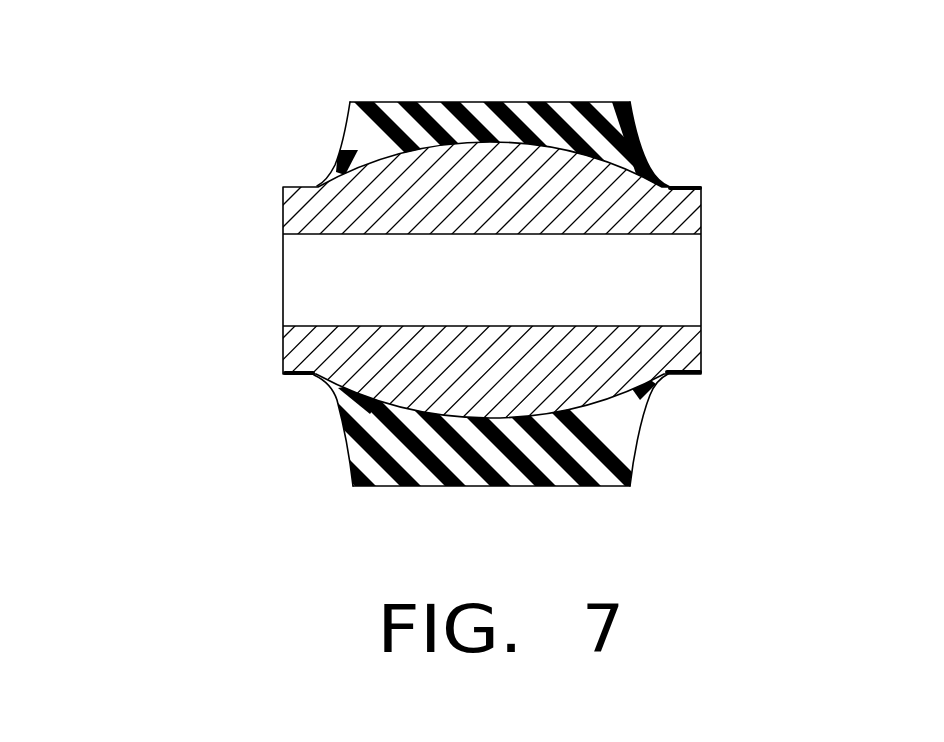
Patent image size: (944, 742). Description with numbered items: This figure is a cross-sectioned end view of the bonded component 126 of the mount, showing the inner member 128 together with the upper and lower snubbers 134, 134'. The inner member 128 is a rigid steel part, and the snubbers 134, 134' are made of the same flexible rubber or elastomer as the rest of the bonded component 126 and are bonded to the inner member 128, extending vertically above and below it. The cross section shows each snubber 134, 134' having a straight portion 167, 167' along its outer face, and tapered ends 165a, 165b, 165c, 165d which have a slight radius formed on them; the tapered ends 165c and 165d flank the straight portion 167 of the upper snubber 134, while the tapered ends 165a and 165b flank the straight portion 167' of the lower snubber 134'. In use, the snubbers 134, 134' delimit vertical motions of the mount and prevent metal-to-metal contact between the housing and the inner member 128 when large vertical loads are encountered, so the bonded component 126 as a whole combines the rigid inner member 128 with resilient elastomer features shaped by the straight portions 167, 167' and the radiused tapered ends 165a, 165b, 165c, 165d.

The bonded component 126 is at (277, 165).
The inner member 128 is at (690, 209).
The snubber 134 is at (493, 103).
The snubber 134' is at (498, 469).
The straight portion 167 is at (482, 58).
The straight portion 167' is at (484, 529).
The tapered end 165a is at (348, 428).
The tapered end 165b is at (635, 427).
The tapered end 165c is at (635, 132).
The tapered end 165d is at (345, 138).